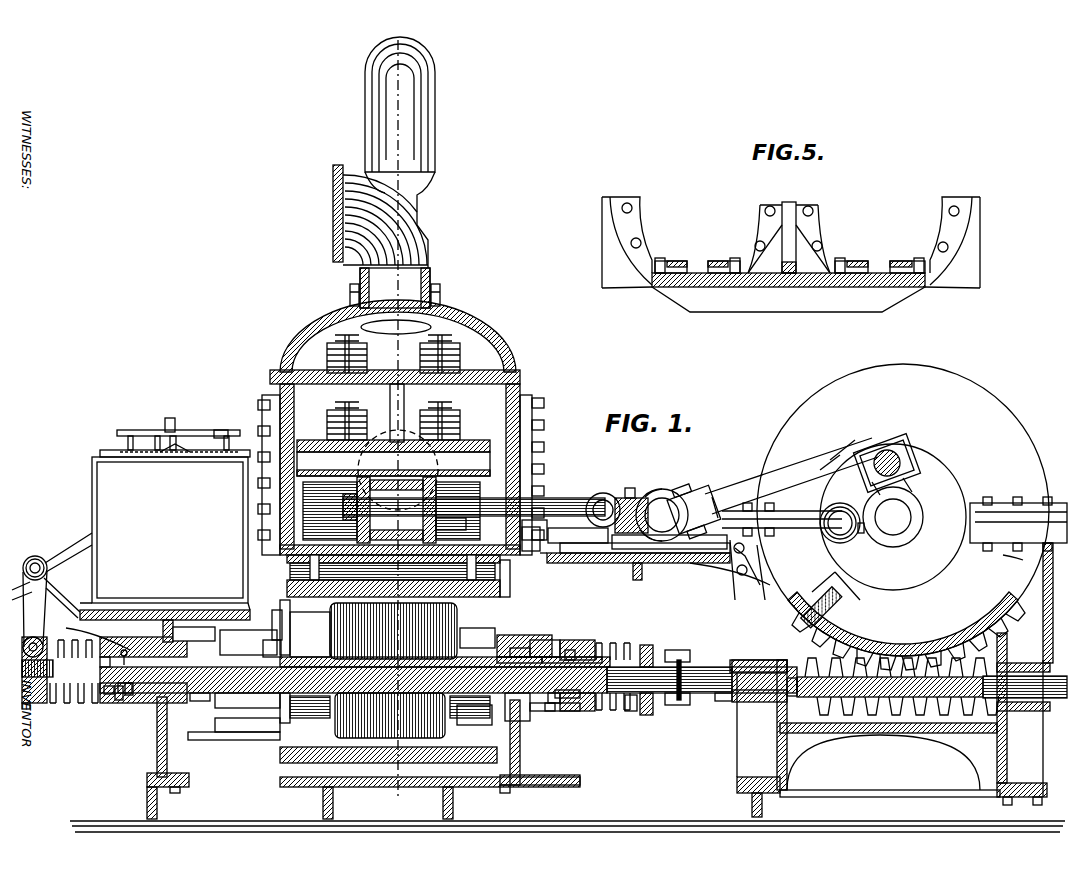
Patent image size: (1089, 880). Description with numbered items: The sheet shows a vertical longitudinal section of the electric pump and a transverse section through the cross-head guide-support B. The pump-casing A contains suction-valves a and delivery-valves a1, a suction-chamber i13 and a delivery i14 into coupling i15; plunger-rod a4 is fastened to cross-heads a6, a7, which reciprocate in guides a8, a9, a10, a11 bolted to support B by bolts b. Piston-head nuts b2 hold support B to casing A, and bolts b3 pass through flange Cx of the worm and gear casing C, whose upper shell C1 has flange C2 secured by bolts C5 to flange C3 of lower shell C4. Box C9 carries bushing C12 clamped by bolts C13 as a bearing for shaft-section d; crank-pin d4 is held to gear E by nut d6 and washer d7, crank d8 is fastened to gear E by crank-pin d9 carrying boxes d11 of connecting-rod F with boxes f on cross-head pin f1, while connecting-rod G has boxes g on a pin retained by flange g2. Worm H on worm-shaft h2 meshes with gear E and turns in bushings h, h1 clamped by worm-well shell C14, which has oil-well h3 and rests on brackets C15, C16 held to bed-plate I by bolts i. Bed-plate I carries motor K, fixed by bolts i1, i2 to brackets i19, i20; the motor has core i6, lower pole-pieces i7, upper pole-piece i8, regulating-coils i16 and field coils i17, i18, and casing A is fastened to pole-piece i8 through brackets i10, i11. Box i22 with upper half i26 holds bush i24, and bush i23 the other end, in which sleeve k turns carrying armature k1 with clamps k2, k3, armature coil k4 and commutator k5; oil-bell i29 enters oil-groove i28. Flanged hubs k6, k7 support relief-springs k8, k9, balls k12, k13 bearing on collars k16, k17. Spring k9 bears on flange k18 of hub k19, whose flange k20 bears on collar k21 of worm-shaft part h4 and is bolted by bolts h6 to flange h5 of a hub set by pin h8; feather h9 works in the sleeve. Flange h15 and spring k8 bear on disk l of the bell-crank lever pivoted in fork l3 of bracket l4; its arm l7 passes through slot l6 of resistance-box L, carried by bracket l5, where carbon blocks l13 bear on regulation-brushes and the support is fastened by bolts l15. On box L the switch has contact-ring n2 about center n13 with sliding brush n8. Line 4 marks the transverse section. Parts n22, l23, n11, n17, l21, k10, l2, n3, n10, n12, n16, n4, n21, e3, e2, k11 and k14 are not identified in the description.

In FIG. 1, the section line 4 is at (400, 38).
In FIG. 1, the suction-chamber i13 is at (392, 218).
In FIG. 1, the delivery i14 is at (398, 336).
In FIG. 1, the pump-casing A is at (401, 462).
In FIG. 1, the delivery-valves a1 is at (367, 380).
In FIG. 1, the suction-valves a is at (367, 438).
In FIG. 1, the coupling i15 is at (393, 470).
In FIG. 1, the plunger-rod a4 is at (494, 507).
In FIG. 1, the sleeve n22 is at (451, 525).
In FIG. 1, the field-magnet coil i17 is at (393, 568).
In FIG. 1, the upper pole-piece i8 is at (287, 592).
In FIG. 1, the supporting-bracket i11 is at (508, 575).
In FIG. 1, the motor K is at (373, 760).
In FIG. 1, the armature k1 is at (338, 668).
In FIG. 1, the clamp k3 is at (390, 710).
In FIG. 1, the armature-sleeve k is at (301, 708).
In FIG. 1, the clamp k2 is at (271, 634).
In FIG. 1, the field-magnet coil i18 is at (477, 638).
In FIG. 1, the magnetic core i6 is at (474, 715).
In FIG. 1, the supporting-bracket i10 is at (515, 717).
In FIG. 1, the bracket i20 is at (528, 752).
In FIG. 1, the bearing-bush i24 is at (548, 712).
In FIG. 1, the box i22 is at (572, 720).
In FIG. 1, the bolt i2 is at (508, 795).
In FIG. 1, the bearing-bushing h is at (448, 671).
In FIG. 1, the main bed-plate I is at (567, 812).
In FIG. 1, the bracket i19 is at (168, 758).
In FIG. 1, the bolt i1 is at (175, 794).
In FIG. 1, the bar l23 is at (204, 702).
In FIG. 1, the frame n11 is at (245, 700).
In FIG. 1, the bar n17 is at (278, 736).
In FIG. 1, the collar l21 is at (145, 700).
In FIG. 1, the carbon blocks l13 is at (22, 668).
In FIG. 1, the pin h8 is at (64, 703).
In FIG. 1, the helical relief-spring k8 is at (45, 690).
In FIG. 1, the flange h15 is at (27, 712).
In FIG. 1, the feather h9 is at (102, 700).
In FIG. 1, the flanged hub k6 is at (112, 705).
In FIG. 1, the collar k10 is at (118, 710).
In FIG. 1, the ball k12 is at (130, 710).
In FIG. 1, the knob or disk l is at (28, 640).
In FIG. 1, the pivot l2 is at (35, 560).
In FIG. 1, the upper arm l7 is at (70, 553).
In FIG. 1, the fork l3 is at (62, 600).
In FIG. 1, the bracket l4 is at (90, 630).
In FIG. 1, the slot l6 is at (19, 591).
In FIG. 1, the regulation resistance-box L is at (165, 538).
In FIG. 1, the bracket l5 is at (232, 618).
In FIG. 1, the bolts l15 is at (194, 634).
In FIG. 1, the commutator k5 is at (232, 645).
In FIG. 1, the steel collar k16 is at (126, 650).
In FIG. 1, the contact-ring n2 is at (104, 456).
In FIG. 1, the post n3 is at (129, 431).
In FIG. 1, the post n10 is at (157, 436).
In FIG. 1, the common center n13 is at (182, 416).
In FIG. 1, the lever n12 is at (178, 445).
In FIG. 1, the post n16 is at (180, 450).
In FIG. 1, the sliding brush n8 is at (226, 422).
In FIG. 1, the post n4 is at (238, 434).
In FIG. 1, the rack n21 is at (198, 458).
In FIG. 1, the guide-support B is at (635, 573).
In FIG. 5, the guide-support B is at (791, 292).
In FIG. 1, the cross-head a6 is at (660, 565).
In FIG. 1, the cross-head a7 is at (565, 538).
In FIG. 1, the guide a9 is at (669, 542).
In FIG. 5, the guide a9 is at (714, 262).
In FIG. 1, the piston-head nuts b2 is at (541, 545).
In FIG. 5, the piston-head nuts b2 is at (640, 240).
In FIG. 1, the flange g2 is at (610, 498).
In FIG. 1, the boxes g is at (640, 495).
In FIG. 1, the boxes f is at (665, 492).
In FIG. 1, the cross-head pin f1 is at (693, 510).
In FIG. 1, the connecting-rod G is at (715, 505).
In FIG. 1, the connecting-rod F is at (791, 476).
In FIG. 1, the flange C3 is at (798, 528).
In FIG. 1, the bolts b3 is at (748, 570).
In FIG. 1, the bolts b is at (730, 553).
In FIG. 1, the worm and gear casing C is at (903, 510).
In FIG. 1, the upper shell C1 is at (893, 484).
In FIG. 1, the bolts C5 is at (785, 490).
In FIG. 1, the flange C2 is at (803, 490).
In FIG. 1, the shaft-section d is at (893, 525).
In FIG. 1, the crank-pin d4 is at (840, 530).
In FIG. 1, the washer d7 is at (850, 525).
In FIG. 1, the nut d6 is at (858, 515).
In FIG. 1, the boxes d11 is at (887, 450).
In FIG. 1, the crank-pin d9 is at (895, 463).
In FIG. 1, the crank d8 is at (910, 497).
In FIG. 1, the lower shell C4 is at (825, 585).
In FIG. 1, the segment e3 is at (830, 617).
In FIG. 1, the gear E is at (855, 640).
In FIG. 1, the bracket C15 is at (1018, 518).
In FIG. 1, the bushing C12 is at (1030, 515).
In FIG. 1, the bolts C13 is at (1041, 594).
In FIG. 1, the segment e2 is at (1013, 560).
In FIG. 1, the worm H is at (900, 712).
In FIG. 1, the oil-well h3 is at (797, 702).
In FIG. 1, the bearing-bushing h1 is at (1020, 668).
In FIG. 1, the worm-well shell C14 is at (878, 735).
In FIG. 1, the bracket C16 is at (1007, 752).
In FIG. 1, the lower pole-pieces i7 is at (1036, 805).
In FIG. 1, the box C9 is at (758, 726).
In FIG. 1, the flange Cx is at (760, 590).
In FIG. 1, the connecting-bolts i is at (752, 800).
In FIG. 1, the flange h5 is at (722, 652).
In FIG. 1, the worm-shaft h2 is at (722, 702).
In FIG. 1, the bolts h6 is at (688, 705).
In FIG. 1, the collar k21 is at (690, 700).
In FIG. 1, the flange k20 is at (680, 652).
In FIG. 1, the flange k18 is at (672, 650).
In FIG. 1, the hub k19 is at (647, 715).
In FIG. 1, the coil of armature-winding k4 is at (635, 712).
In FIG. 1, the ball k13 is at (572, 650).
In FIG. 1, the sleeve k11 is at (585, 668).
In FIG. 1, the helical relief-spring k9 is at (612, 712).
In FIG. 1, the flanged hub k7 is at (590, 712).
In FIG. 1, the steel collar k17 is at (583, 712).
In FIG. 1, the collar k14 is at (640, 648).
In FIG. 1, the regulating-coils i16 is at (515, 636).
In FIG. 1, the oil-bell i29 is at (528, 648).
In FIG. 1, the oil-groove i28 is at (516, 657).
In FIG. 1, the upper half i26 is at (560, 657).
In FIG. 1, the bearing-bush i23 is at (264, 627).
In FIG. 1, the worm-shaft part h4 is at (273, 616).
In FIG. 5, the guide a8 is at (675, 262).
In FIG. 5, the guide a10 is at (858, 262).
In FIG. 5, the guide a11 is at (897, 262).